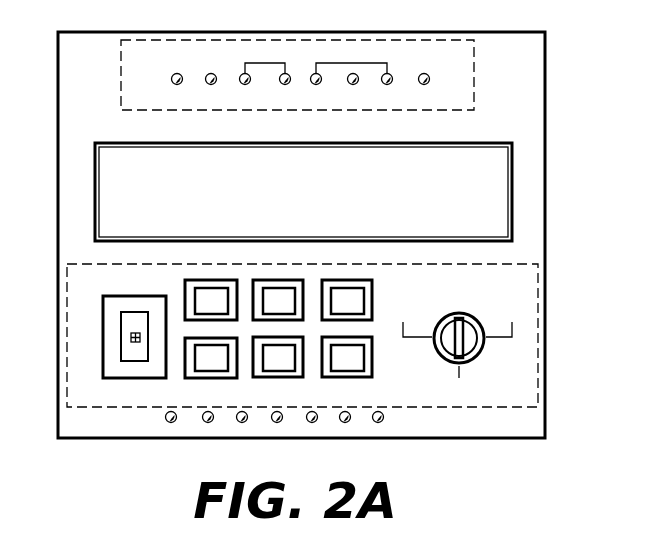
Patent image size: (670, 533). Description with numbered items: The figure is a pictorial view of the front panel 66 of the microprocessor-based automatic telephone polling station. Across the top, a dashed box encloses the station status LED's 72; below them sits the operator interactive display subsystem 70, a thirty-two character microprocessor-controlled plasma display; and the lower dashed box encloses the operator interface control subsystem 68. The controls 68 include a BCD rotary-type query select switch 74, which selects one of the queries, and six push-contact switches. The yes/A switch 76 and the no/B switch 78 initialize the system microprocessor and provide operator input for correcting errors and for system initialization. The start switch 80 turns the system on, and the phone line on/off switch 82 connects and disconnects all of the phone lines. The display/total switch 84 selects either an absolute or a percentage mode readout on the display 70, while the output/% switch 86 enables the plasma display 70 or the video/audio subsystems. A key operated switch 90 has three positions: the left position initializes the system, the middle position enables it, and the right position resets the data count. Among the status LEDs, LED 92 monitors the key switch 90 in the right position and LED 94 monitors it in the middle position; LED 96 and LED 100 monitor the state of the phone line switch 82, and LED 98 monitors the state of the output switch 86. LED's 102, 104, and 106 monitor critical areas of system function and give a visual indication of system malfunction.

The front panel of the microprocessor based automatic telephone polling station 66 is at (586, 240).
The operator interface control subsystem 68 is at (538, 376).
The operator interactive display subsystem 70 is at (512, 178).
The station status LED's 72 is at (474, 73).
The BCD rotary-type query select switch 74 is at (132, 337).
The push-contact switch "yes/A" 76 is at (200, 300).
The push-contact switch "no/B" 78 is at (268, 300).
The push-contact switch "start" 80 is at (352, 297).
The push-contact switch "phone line on/off" 82 is at (205, 358).
The push-contact switch "display/total" 84 is at (289, 367).
The push-contact switch "output/%" 86 is at (358, 358).
The key operated switch 90 is at (461, 318).
The LED 92 is at (172, 76).
The LED 94 is at (210, 85).
The LED 96 is at (243, 86).
The LED 98 is at (287, 73).
The LED 100 is at (421, 86).
The LED 102 is at (312, 86).
The LED 104 is at (350, 86).
The LED 106 is at (391, 86).